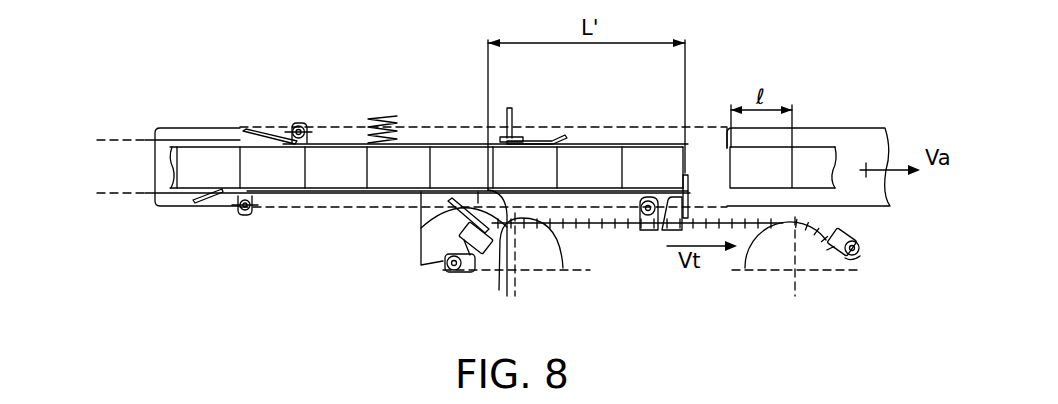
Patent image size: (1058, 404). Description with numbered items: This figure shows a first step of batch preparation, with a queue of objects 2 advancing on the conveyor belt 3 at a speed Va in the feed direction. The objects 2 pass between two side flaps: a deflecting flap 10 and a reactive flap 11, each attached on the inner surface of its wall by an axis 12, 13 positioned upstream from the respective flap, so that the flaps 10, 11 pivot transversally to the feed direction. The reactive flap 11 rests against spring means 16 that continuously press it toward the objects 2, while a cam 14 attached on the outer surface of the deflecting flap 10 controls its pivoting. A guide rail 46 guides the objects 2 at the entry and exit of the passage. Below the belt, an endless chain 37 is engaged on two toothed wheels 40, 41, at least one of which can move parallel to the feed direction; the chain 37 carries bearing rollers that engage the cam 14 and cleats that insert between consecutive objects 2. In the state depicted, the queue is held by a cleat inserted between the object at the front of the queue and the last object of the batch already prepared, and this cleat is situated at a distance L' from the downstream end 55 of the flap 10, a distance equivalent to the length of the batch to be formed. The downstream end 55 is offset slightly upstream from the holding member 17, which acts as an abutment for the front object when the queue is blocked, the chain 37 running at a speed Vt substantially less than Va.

The objects 2 is at (216, 179).
The conveyor belt 3 is at (177, 131).
The deflecting flap 10 is at (313, 193).
The reactive flap 11 is at (345, 143).
The axis 12 is at (242, 216).
The axis 13 is at (297, 125).
The cam 14 is at (447, 258).
The spring means 16 is at (398, 121).
The holding member 17 is at (513, 122).
The endless chain 37 is at (600, 228).
The toothed wheel 40 is at (540, 262).
The toothed wheel 41 is at (815, 265).
The guide rail 46 is at (146, 139).
The downstream end of the flap 55 is at (502, 258).